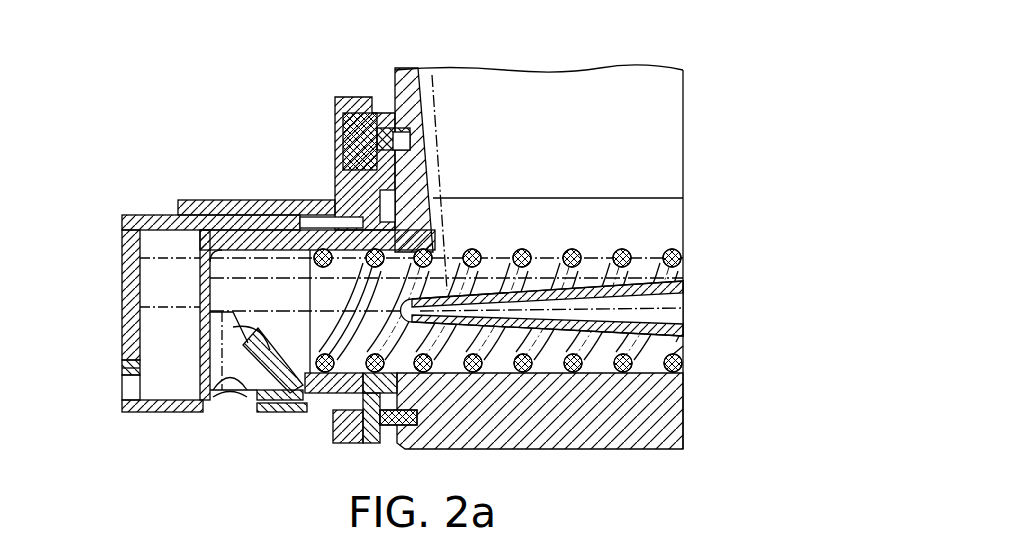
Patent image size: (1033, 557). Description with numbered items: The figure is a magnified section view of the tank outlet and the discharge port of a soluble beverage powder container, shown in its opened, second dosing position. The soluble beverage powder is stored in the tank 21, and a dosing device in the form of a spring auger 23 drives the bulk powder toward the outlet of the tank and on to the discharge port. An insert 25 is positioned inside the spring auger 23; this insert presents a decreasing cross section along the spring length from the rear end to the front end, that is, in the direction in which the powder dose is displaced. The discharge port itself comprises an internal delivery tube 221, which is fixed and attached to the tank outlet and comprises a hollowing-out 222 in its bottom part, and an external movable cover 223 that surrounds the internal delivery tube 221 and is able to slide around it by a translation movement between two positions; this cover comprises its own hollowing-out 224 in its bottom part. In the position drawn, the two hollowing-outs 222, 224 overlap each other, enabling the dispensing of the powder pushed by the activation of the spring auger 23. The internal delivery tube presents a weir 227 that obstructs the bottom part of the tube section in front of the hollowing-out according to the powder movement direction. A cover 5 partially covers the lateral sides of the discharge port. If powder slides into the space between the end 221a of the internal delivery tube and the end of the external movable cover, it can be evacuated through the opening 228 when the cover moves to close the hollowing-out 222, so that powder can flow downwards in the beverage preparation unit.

The tank 21 is at (508, 102).
The spring auger 23 is at (524, 194).
The insert 25 is at (685, 293).
The cover 5 is at (276, 201).
The internal delivery tube 221 is at (235, 230).
The end of the internal delivery tube 221a is at (207, 289).
The hollowing-out 222 is at (217, 402).
The external movable cover 223 is at (163, 214).
The hollowing-out 224 is at (243, 408).
The weir 227 is at (270, 400).
The opening 228 is at (122, 393).